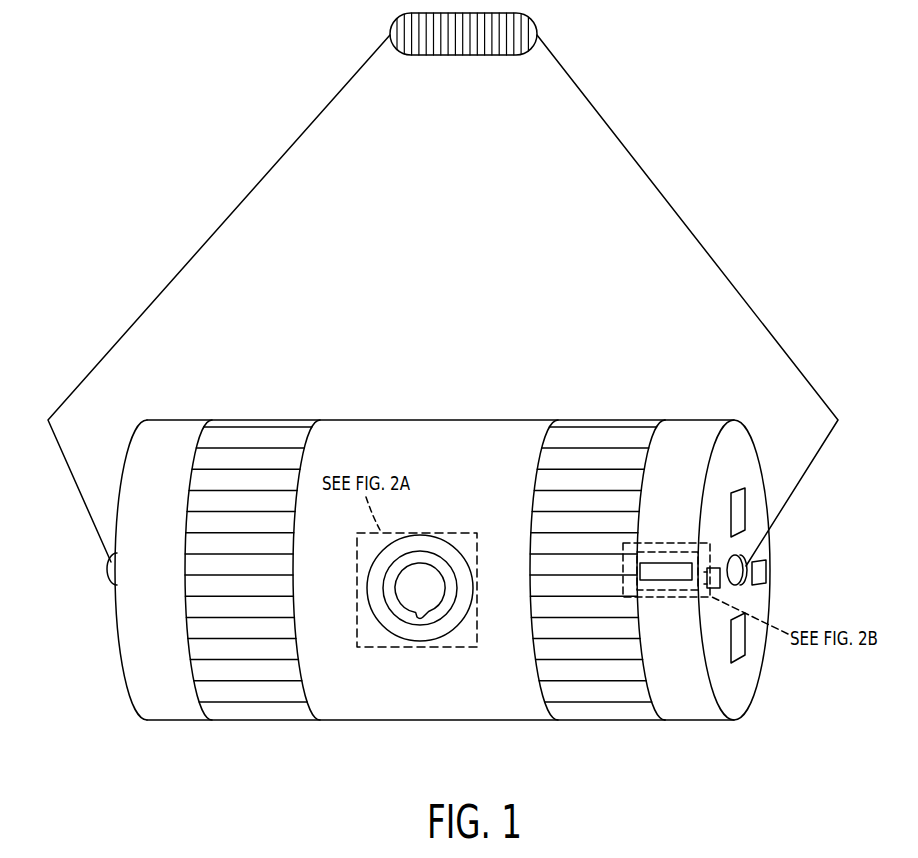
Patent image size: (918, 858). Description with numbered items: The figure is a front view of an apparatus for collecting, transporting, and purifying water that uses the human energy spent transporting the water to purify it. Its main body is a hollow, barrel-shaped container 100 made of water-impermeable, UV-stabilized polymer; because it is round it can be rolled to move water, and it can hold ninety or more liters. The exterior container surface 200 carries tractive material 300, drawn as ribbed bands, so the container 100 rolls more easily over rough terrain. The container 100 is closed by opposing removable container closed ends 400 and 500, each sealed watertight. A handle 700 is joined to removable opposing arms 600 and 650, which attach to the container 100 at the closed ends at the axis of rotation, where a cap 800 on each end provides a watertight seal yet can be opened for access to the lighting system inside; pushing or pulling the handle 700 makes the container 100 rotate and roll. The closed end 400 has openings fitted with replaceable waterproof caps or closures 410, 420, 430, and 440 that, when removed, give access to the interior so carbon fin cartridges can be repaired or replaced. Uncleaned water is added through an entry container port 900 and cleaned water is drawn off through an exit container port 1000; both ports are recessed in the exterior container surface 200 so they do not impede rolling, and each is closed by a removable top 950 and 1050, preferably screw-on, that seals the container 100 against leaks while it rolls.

The container 100 is at (172, 418).
The exterior container surface 200 is at (698, 432).
The tractive material 300 is at (632, 440).
The container closed end 400 is at (742, 698).
The replaceable cap 410 is at (740, 650).
The replaceable cap 420 is at (767, 572).
The replaceable cap 430 is at (740, 497).
The replaceable cap 440 is at (713, 568).
The container closed end 500 is at (116, 630).
The opposing arm 600 is at (206, 243).
The opposing arm 650 is at (669, 204).
The handle 700 is at (462, 56).
The cap 800 is at (110, 567).
The entry container port 900 is at (434, 598).
The removable top 950 is at (428, 578).
The exit container port 1000 is at (652, 583).
The removable top 1050 is at (652, 568).